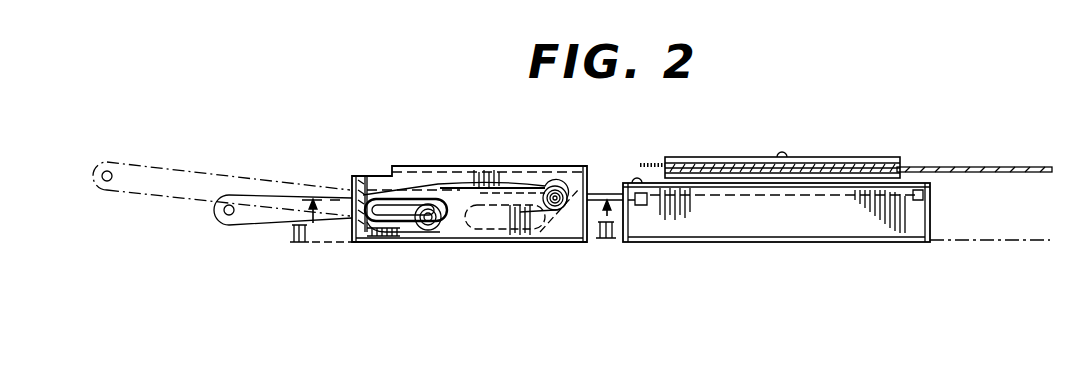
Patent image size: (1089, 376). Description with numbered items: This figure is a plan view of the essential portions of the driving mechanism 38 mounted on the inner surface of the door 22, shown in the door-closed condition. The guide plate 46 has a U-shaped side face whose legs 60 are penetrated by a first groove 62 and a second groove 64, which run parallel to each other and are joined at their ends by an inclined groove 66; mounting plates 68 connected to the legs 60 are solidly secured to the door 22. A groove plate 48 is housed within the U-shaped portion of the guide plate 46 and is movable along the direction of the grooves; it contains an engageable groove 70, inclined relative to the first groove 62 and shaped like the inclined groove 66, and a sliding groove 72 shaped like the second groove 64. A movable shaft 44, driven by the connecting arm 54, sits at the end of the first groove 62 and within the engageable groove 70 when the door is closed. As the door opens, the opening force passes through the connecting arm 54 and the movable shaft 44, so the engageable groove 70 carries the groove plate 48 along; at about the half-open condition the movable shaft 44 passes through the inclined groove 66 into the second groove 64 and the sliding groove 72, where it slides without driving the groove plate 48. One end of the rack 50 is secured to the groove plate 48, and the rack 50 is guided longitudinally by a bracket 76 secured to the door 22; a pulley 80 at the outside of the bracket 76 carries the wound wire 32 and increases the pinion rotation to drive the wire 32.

The door 22 is at (985, 240).
The wire 32 is at (975, 170).
The driving mechanism 38 is at (762, 150).
The movable shaft 44 is at (556, 186).
The guide plate 46 is at (500, 166).
The groove plate 48 is at (482, 186).
The rack 50 is at (607, 194).
The connecting arm 54 is at (272, 198).
The legs 60 is at (590, 242).
The first groove 62 is at (520, 186).
The second groove 64 is at (407, 222).
The inclined groove 66 is at (435, 200).
The mounting plates 68 is at (380, 243).
The engageable groove 70 is at (552, 212).
The sliding groove 72 is at (488, 232).
The bracket 76 is at (930, 218).
The pulley 80 is at (848, 160).